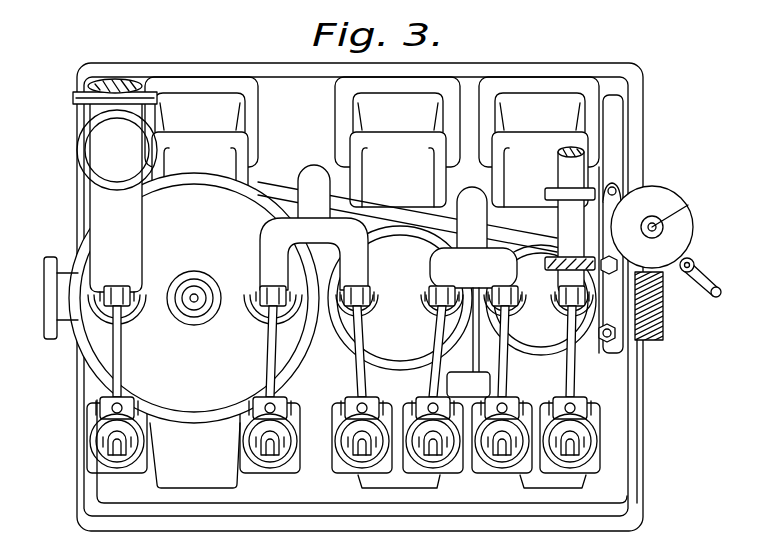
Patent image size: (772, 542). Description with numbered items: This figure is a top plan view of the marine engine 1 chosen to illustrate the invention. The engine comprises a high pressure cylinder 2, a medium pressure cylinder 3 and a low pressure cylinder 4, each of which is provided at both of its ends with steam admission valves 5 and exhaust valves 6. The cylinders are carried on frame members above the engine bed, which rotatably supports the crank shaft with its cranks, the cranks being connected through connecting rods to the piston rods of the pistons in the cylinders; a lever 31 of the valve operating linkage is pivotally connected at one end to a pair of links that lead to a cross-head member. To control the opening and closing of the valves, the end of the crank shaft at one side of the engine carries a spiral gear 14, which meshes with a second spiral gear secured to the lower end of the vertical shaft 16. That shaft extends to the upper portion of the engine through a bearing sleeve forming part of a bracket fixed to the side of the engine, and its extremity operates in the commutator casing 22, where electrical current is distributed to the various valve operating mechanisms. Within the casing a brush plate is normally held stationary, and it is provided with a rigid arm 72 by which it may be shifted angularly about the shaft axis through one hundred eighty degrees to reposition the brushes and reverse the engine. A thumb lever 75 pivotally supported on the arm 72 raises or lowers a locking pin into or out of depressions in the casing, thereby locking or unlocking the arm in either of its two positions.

The marine engine 1 is at (76, 203).
The high pressure cylinder 2 is at (541, 300).
The medium pressure cylinder 3 is at (400, 298).
The low pressure cylinder 4 is at (203, 376).
The steam admission valves 5 is at (262, 320).
The exhaust valves 6 is at (121, 323).
The spiral gear 14 is at (667, 321).
The vertical shaft 16 is at (686, 206).
The commutator casing 22 is at (669, 199).
The lever 31 is at (121, 367).
The rigid arm 72 is at (705, 276).
The thumb lever 75 is at (713, 292).